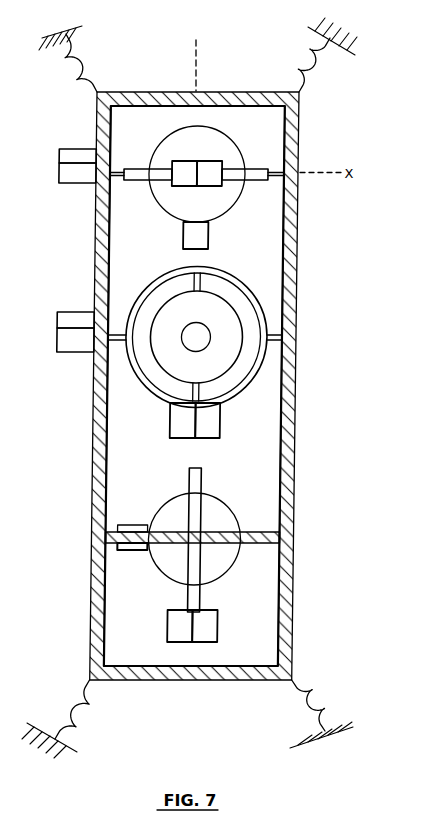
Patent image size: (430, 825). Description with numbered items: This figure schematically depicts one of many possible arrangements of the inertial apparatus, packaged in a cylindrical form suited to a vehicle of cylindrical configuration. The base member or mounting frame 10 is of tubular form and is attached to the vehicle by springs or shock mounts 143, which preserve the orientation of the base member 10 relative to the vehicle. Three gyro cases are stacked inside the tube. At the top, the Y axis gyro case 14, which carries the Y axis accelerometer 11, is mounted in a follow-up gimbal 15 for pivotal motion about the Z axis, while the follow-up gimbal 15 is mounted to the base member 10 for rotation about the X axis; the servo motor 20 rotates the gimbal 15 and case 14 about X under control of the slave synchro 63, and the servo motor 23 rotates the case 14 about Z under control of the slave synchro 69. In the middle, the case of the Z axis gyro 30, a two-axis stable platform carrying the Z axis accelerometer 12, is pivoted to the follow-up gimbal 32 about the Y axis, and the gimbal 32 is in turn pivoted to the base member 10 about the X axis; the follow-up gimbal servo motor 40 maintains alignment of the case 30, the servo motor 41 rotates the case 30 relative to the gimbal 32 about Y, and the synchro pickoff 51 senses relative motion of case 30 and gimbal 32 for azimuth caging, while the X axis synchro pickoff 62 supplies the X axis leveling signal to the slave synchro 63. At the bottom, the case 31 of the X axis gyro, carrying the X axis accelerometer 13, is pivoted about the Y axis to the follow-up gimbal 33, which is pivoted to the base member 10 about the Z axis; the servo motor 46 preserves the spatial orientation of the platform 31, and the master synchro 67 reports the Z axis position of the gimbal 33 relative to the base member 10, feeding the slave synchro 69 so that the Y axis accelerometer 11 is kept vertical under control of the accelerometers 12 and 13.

The base member 10 is at (256, 543).
The Y axis accelerometer 11 is at (205, 244).
The Z axis accelerometer 12 is at (195, 337).
The X axis accelerometer 13 is at (133, 525).
The Y axis gyro case 14 is at (207, 209).
The follow-up gimbal 15 is at (251, 173).
The servo motor 20 is at (72, 157).
The servo motor 23 is at (206, 168).
The Z axis gyro case 30 is at (196, 337).
The X axis gyro case 31 is at (182, 565).
The follow-up gimbal 32 is at (239, 285).
The follow-up gimbal 33 is at (203, 475).
The follow-up gimbal servo motor 40 is at (70, 323).
The servo motor 41 is at (212, 422).
The servo motor 46 is at (214, 623).
The synchro pickoff 51 is at (182, 423).
The X axis synchro pickoff 62 is at (83, 342).
The slave synchro 63 is at (75, 175).
The master synchro 67 is at (186, 622).
The slave synchro 69 is at (186, 170).
The springs or shock mounts 143 is at (82, 60).